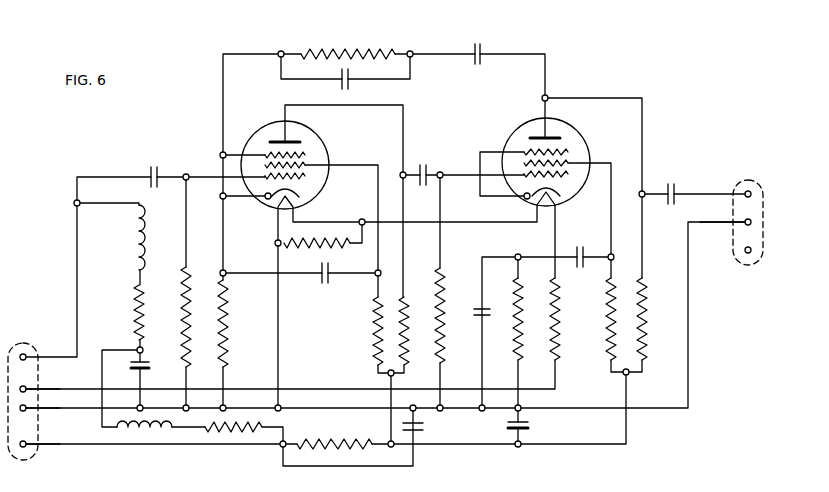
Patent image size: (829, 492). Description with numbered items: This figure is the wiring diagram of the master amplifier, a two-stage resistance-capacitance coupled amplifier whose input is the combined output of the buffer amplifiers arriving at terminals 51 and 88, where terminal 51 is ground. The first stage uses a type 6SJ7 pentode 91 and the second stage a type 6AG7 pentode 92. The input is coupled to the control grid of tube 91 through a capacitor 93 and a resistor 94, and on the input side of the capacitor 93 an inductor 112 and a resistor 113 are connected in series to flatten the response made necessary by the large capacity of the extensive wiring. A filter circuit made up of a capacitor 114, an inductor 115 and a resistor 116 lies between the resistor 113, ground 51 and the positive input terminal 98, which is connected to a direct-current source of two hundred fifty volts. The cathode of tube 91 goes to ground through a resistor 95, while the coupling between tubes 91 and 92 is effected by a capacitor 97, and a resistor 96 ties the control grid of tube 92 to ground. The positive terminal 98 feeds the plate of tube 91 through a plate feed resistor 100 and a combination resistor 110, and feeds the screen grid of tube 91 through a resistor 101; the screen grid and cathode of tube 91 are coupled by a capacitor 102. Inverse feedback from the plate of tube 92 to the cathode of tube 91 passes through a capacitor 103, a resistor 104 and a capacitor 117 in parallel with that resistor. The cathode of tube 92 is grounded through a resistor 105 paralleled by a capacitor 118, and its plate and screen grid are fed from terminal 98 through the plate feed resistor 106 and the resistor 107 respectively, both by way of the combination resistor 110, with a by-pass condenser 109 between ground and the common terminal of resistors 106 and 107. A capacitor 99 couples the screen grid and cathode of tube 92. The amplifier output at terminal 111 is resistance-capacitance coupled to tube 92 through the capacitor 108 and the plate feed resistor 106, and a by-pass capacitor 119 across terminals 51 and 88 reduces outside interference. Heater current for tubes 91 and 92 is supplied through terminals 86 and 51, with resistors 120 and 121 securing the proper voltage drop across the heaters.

The pentode 91 is at (315, 140).
The pentode 92 is at (578, 148).
The capacitor 93 is at (156, 172).
The resistor 94 is at (184, 332).
The resistor 95 is at (227, 340).
The resistor 96 is at (446, 305).
The capacitor 97 is at (426, 168).
The positive input terminal 98 is at (26, 444).
The capacitor 99 is at (585, 248).
The plate feed resistor 100 is at (409, 310).
The resistor 101 is at (376, 345).
The capacitor 102 is at (330, 278).
The capacitor 103 is at (483, 46).
The resistor 104 is at (305, 50).
The resistor 105 is at (512, 318).
The plate feed resistor 106 is at (650, 302).
The resistor 107 is at (605, 330).
The capacitor 108 is at (676, 190).
The by-pass condenser 109 is at (525, 428).
The combination resistor 110 is at (347, 440).
The output terminal 111 is at (746, 180).
The inductor 112 is at (147, 232).
The resistor 113 is at (137, 310).
The capacitor 114 is at (138, 360).
The inductor 115 is at (140, 432).
The resistor 116 is at (245, 432).
The capacitor 117 is at (350, 84).
The capacitor 118 is at (480, 320).
The by-pass capacitor 119 is at (420, 426).
The resistor 120 is at (561, 342).
The resistor 121 is at (315, 235).
The terminal 88 is at (14, 345).
The terminal 86 is at (26, 389).
The ground 51 is at (26, 408).